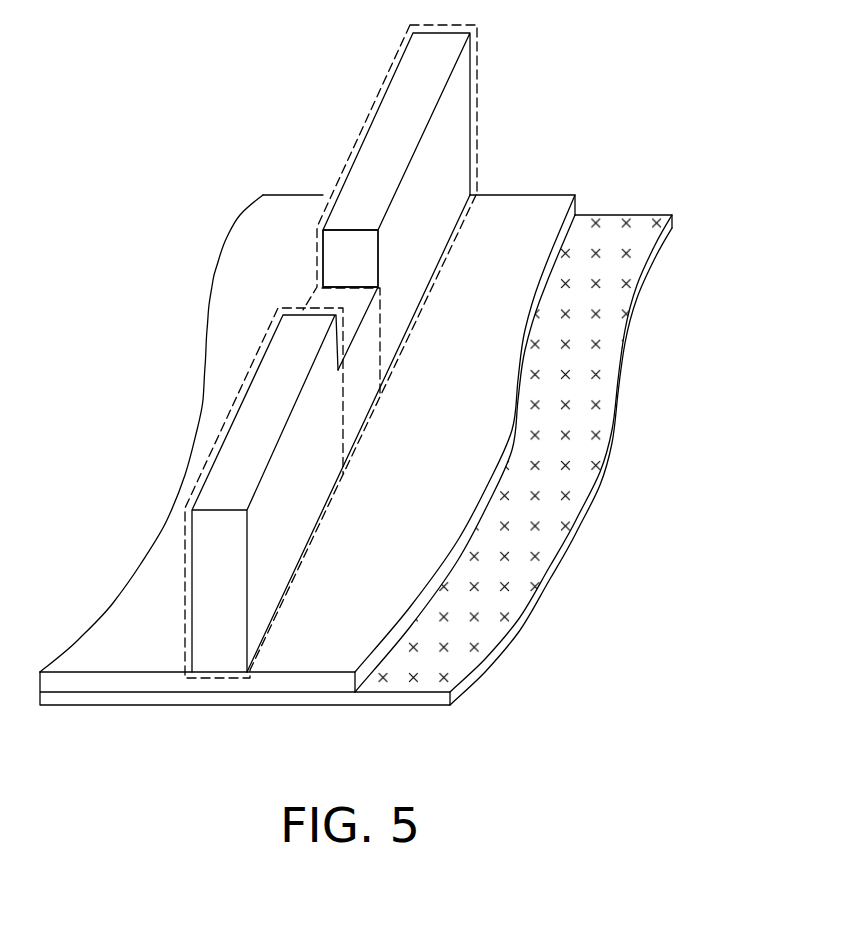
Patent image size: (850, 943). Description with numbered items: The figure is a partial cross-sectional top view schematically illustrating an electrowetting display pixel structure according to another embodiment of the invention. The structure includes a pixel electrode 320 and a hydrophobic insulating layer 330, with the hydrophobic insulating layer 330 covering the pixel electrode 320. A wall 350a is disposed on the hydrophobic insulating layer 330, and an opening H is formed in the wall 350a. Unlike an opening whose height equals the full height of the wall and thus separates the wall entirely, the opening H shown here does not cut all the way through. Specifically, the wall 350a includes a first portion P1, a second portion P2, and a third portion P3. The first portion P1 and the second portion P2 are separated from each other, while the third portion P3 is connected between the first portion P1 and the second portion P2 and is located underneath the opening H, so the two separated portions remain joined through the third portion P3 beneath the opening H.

The pixel electrode 320 is at (612, 245).
The hydrophobic insulating layer 330 is at (488, 270).
The wall 350a is at (730, 338).
The opening H is at (300, 295).
The first portion P1 is at (307, 550).
The second portion P2 is at (415, 317).
The third portion P3 is at (367, 437).